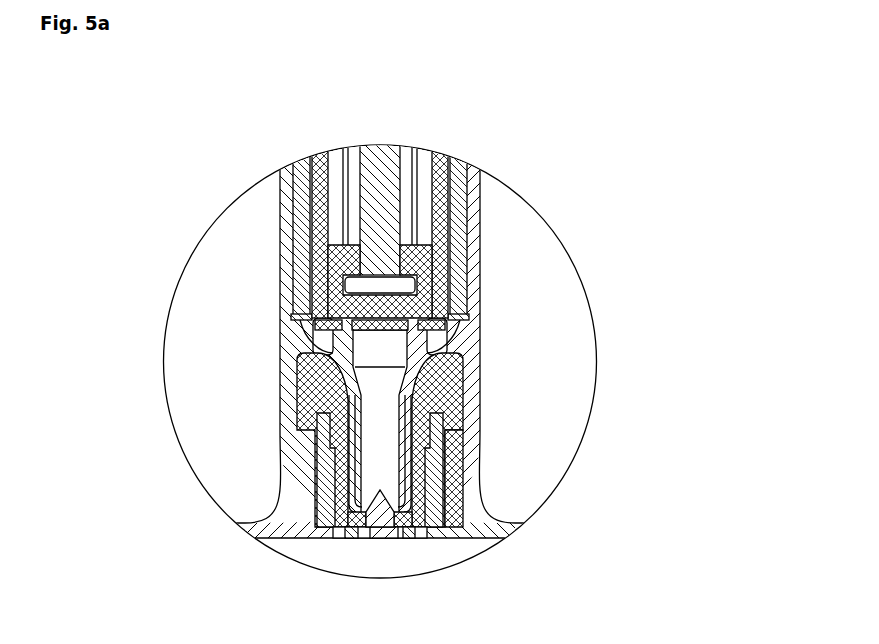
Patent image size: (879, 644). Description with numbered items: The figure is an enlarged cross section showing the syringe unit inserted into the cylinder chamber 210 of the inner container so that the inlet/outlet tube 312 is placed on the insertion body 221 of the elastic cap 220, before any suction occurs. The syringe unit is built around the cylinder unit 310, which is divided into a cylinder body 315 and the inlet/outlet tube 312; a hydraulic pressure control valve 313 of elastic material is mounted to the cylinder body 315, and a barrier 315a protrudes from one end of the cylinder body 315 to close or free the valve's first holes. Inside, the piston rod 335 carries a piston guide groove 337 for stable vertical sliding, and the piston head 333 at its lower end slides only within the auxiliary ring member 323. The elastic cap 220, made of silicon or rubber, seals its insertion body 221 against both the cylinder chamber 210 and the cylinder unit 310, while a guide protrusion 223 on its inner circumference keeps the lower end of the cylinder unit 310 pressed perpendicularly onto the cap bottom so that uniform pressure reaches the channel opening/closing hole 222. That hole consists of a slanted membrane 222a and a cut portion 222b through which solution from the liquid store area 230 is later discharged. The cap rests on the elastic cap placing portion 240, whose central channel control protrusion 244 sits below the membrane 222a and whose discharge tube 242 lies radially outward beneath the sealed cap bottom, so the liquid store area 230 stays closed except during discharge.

The cylinder chamber 210 is at (481, 293).
The elastic cap 220 is at (327, 477).
The insertion body 221 is at (450, 352).
The channel opening/closing hole 222 is at (690, 340).
The membrane 222a is at (448, 440).
The cut portion 222b is at (416, 437).
The guide protrusion 223 is at (378, 494).
The liquid store area 230 is at (268, 522).
The elastic cap placing portion 240 is at (663, 498).
The discharge tube 242 is at (410, 538).
The channel control protrusion 244 is at (400, 502).
The cylinder unit 310 is at (83, 450).
The inlet/outlet tube 312 is at (373, 428).
The hydraulic pressure control valve 313 is at (305, 328).
The cylinder body 315 is at (307, 290).
The barrier 315a is at (345, 346).
The auxiliary ring member 323 is at (443, 205).
The piston head 333 is at (424, 242).
The piston rod 335 is at (388, 167).
The piston guide groove 337 is at (412, 178).